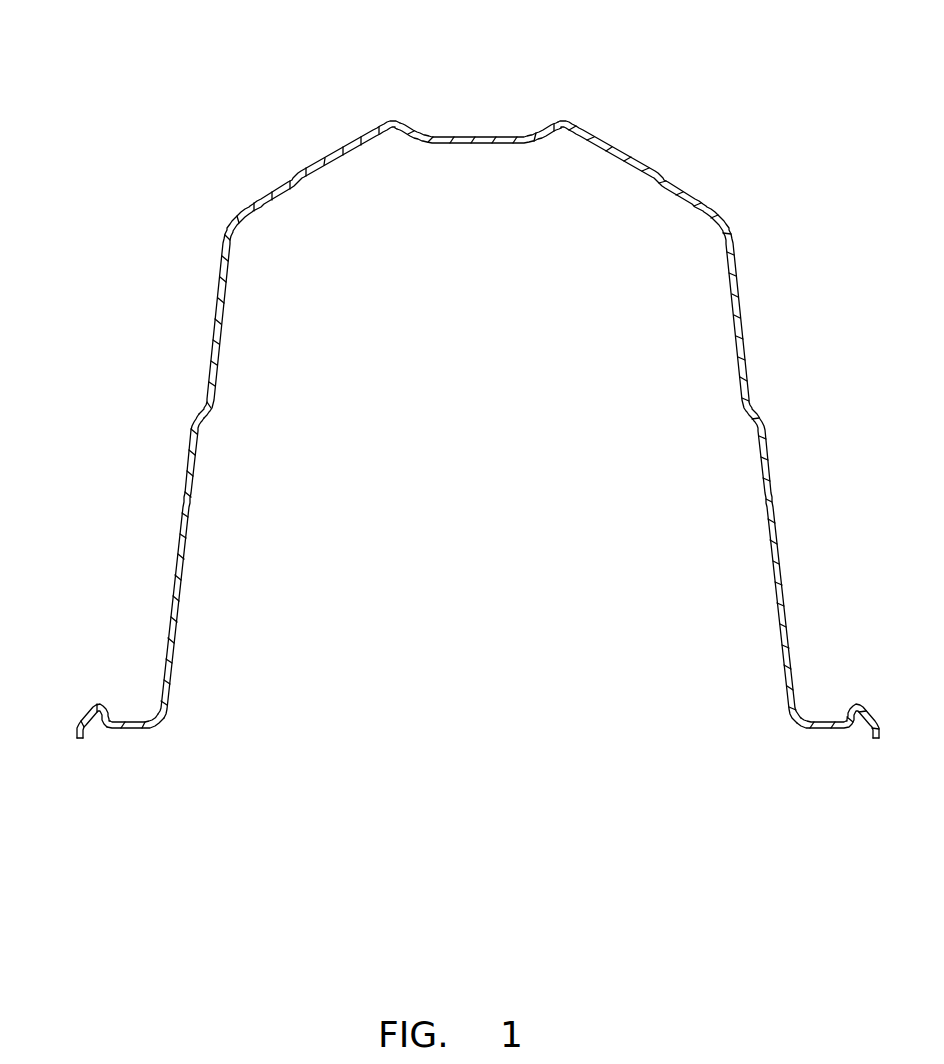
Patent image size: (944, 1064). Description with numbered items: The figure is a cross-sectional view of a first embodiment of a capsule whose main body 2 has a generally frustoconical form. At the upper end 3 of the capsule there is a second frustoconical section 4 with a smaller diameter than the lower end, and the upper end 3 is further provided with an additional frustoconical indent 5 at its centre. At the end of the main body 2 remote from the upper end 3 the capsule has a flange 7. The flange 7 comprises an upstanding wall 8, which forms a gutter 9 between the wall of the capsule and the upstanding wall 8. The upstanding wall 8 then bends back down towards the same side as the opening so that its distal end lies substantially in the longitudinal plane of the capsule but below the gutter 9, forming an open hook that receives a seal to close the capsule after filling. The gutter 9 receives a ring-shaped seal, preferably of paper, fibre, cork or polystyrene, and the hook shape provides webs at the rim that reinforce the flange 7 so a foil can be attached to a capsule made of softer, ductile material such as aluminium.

The main body 2 is at (156, 489).
The upper end 3 is at (198, 335).
The second frustoconical section 4 is at (746, 318).
The frustoconical indent 5 is at (478, 136).
The flange 7 is at (827, 696).
The upstanding wall 8 is at (97, 705).
The gutter 9 is at (126, 722).